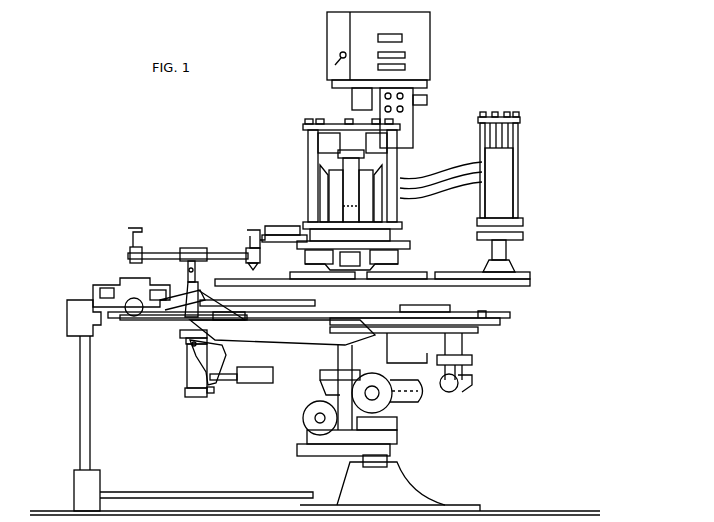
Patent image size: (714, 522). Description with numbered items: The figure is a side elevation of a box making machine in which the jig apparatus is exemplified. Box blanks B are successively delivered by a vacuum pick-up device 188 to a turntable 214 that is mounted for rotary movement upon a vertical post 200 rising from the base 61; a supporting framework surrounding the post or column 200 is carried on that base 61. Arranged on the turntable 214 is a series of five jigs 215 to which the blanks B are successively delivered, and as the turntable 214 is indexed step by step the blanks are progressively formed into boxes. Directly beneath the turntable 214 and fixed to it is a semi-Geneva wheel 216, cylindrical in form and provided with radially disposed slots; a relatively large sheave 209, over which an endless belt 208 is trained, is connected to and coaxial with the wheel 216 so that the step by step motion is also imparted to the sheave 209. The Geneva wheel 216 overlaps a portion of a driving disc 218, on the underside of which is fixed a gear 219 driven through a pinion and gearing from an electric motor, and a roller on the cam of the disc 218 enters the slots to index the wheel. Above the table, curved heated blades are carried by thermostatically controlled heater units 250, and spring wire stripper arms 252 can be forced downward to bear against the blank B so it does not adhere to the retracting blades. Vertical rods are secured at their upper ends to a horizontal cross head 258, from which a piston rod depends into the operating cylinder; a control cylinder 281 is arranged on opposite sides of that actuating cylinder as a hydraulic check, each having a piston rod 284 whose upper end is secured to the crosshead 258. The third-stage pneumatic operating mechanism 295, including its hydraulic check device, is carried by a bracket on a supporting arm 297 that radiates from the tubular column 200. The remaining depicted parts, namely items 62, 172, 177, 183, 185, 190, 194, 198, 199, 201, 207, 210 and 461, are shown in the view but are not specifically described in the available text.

The base 61 is at (290, 497).
The support post 62 is at (87, 430).
The carriage block 172 is at (158, 290).
The guide plate 177 is at (121, 325).
The ball joint 183 is at (128, 262).
The bracket 185 is at (250, 229).
The vacuum pick-up device 188 is at (218, 250).
The post 190 is at (170, 363).
The bracket arm 194 is at (268, 228).
The slide plate 198 is at (232, 316).
The table 199 is at (318, 353).
The vertical post 200 is at (382, 462).
The foot block 201 is at (197, 390).
The lever 207 is at (182, 340).
The endless belt 208 is at (240, 326).
The sheave 209 is at (386, 336).
The block 210 is at (263, 386).
The turntable 214 is at (530, 283).
The jigs 215 is at (446, 270).
The semi-Geneva wheel 216 is at (443, 304).
The driving disc 218 is at (496, 320).
The gear 219 is at (478, 333).
The heater units 250 is at (392, 262).
The spring wire stripper arms 252 is at (357, 252).
The cross head 258 is at (333, 124).
The control cylinder 281 is at (322, 193).
The piston rod 284 is at (320, 145).
The pneumatic operating mechanism 295 is at (523, 188).
The supporting arm 297 is at (430, 178).
The controller 461 is at (421, 43).
The box blanks B is at (118, 268).